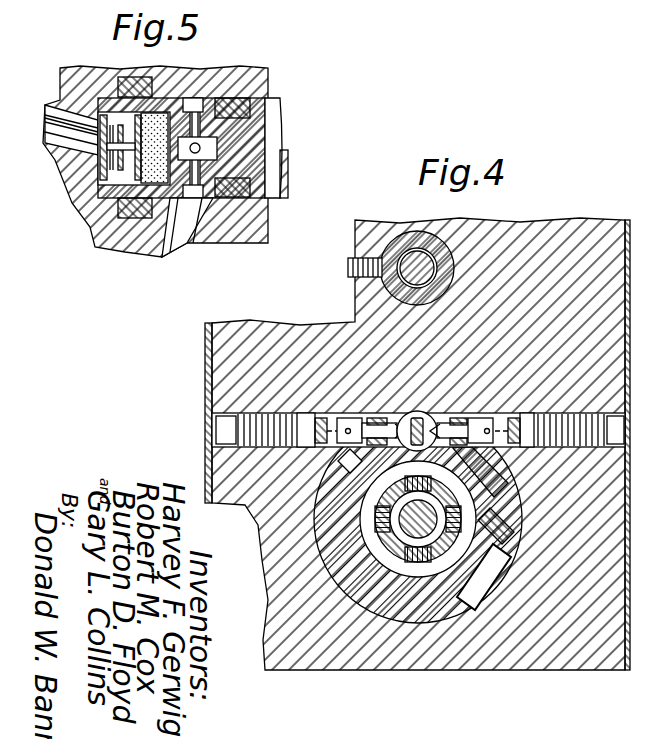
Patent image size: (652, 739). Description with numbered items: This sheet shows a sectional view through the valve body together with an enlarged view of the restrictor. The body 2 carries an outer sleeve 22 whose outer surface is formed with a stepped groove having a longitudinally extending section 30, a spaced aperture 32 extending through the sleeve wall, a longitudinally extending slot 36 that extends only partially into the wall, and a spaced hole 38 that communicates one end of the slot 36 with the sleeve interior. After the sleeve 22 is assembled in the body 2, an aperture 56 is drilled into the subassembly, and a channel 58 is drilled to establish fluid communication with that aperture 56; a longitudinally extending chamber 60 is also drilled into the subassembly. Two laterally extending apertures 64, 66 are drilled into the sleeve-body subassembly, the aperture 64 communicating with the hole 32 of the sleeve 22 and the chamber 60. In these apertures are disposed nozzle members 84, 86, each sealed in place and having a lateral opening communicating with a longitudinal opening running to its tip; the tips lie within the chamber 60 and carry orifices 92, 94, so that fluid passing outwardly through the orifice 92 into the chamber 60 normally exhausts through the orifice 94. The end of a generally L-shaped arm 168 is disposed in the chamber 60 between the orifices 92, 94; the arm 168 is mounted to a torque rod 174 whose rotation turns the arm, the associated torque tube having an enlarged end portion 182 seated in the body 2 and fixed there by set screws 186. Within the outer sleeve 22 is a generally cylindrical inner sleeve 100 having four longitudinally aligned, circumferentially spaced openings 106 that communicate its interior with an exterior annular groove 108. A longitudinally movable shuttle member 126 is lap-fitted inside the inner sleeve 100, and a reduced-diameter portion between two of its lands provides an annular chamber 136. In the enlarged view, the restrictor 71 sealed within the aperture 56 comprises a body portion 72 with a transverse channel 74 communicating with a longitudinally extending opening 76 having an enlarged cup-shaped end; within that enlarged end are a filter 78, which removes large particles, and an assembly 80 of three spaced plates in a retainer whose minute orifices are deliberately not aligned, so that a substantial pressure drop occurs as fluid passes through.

In FIG. 5, the body 2 is at (270, 67).
In FIG. 4, the body 2 is at (537, 672).
In FIG. 5, the outer sleeve 22 is at (92, 238).
In FIG. 4, the longitudinally extending section 30 is at (330, 466).
In FIG. 4, the spaced aperture 32 is at (488, 468).
In FIG. 4, the longitudinally extending slot 36 is at (488, 585).
In FIG. 4, the spaced hole 38 is at (485, 547).
In FIG. 5, the aperture 56 is at (282, 106).
In FIG. 5, the channel 58 is at (195, 237).
In FIG. 4, the chamber 60 is at (417, 411).
In FIG. 4, the laterally extending aperture 64 is at (335, 423).
In FIG. 4, the laterally extending aperture 66 is at (502, 420).
In FIG. 5, the restrictor 71 is at (288, 124).
In FIG. 5, the body portion 72 is at (253, 145).
In FIG. 5, the transverse channel 74 is at (196, 98).
In FIG. 5, the longitudinally extending opening 76 is at (213, 155).
In FIG. 5, the filter 78 is at (148, 175).
In FIG. 5, the assembly 80 is at (100, 168).
In FIG. 4, the nozzle member 84 is at (362, 418).
In FIG. 4, the nozzle member 86 is at (458, 425).
In FIG. 4, the orifice 92 is at (403, 423).
In FIG. 4, the orifice 94 is at (430, 418).
In FIG. 4, the inner sleeve 100 is at (420, 577).
In FIG. 4, the openings 106 is at (380, 523).
In FIG. 4, the exterior annular groove 108 is at (373, 540).
In FIG. 4, the shuttle member 126 is at (398, 540).
In FIG. 4, the annular chamber 136 is at (437, 505).
In FIG. 4, the L-shaped arm 168 is at (408, 418).
In FIG. 4, the torque rod 174 is at (413, 277).
In FIG. 4, the enlarged end portion 182 is at (413, 243).
In FIG. 4, the set screws 186 is at (352, 266).